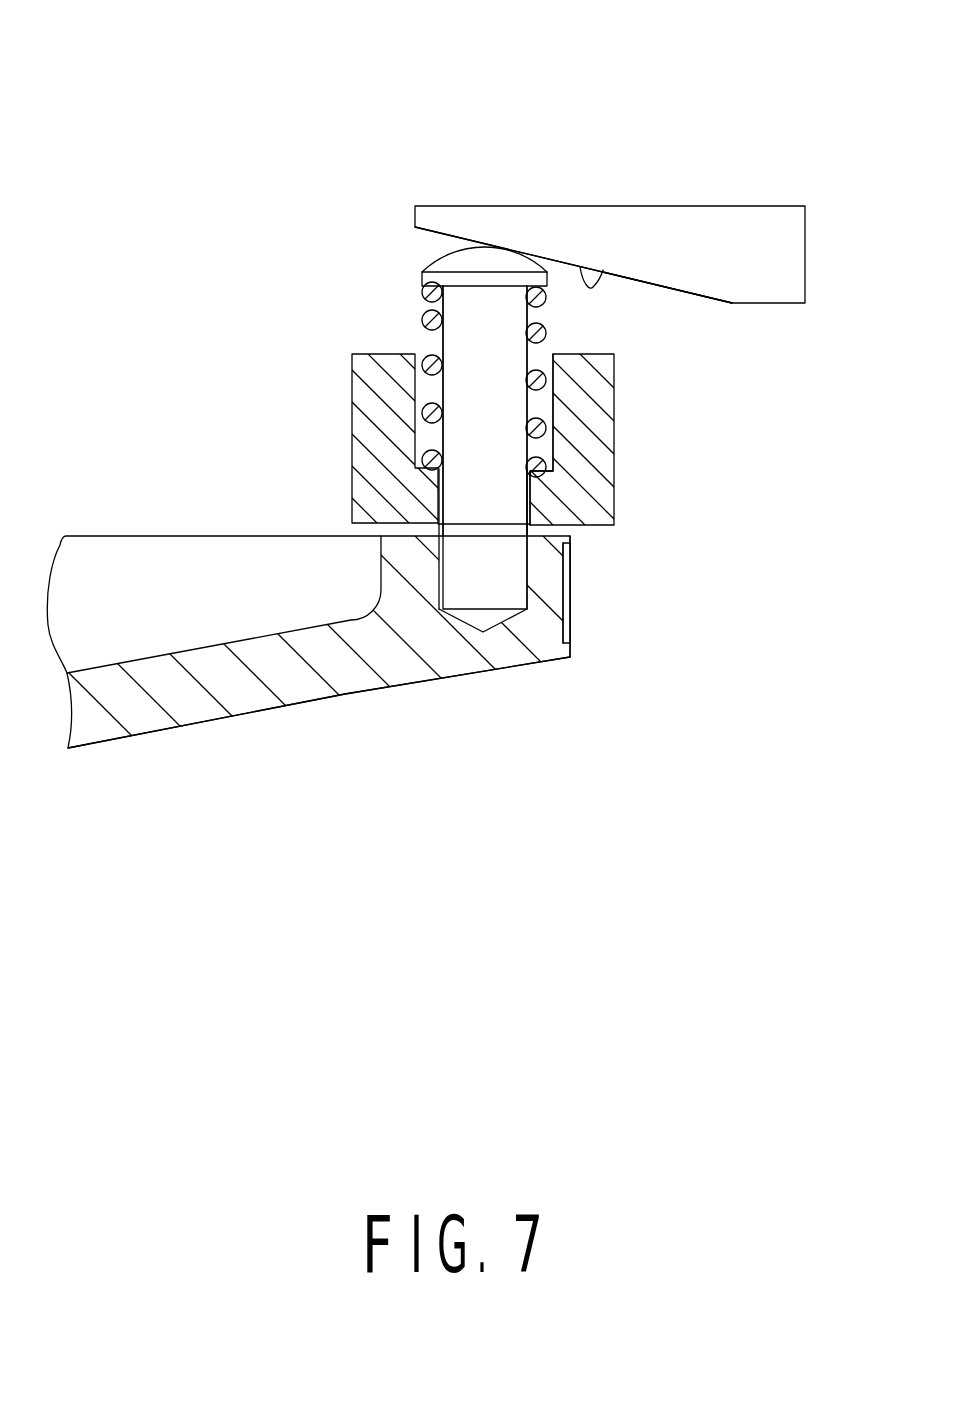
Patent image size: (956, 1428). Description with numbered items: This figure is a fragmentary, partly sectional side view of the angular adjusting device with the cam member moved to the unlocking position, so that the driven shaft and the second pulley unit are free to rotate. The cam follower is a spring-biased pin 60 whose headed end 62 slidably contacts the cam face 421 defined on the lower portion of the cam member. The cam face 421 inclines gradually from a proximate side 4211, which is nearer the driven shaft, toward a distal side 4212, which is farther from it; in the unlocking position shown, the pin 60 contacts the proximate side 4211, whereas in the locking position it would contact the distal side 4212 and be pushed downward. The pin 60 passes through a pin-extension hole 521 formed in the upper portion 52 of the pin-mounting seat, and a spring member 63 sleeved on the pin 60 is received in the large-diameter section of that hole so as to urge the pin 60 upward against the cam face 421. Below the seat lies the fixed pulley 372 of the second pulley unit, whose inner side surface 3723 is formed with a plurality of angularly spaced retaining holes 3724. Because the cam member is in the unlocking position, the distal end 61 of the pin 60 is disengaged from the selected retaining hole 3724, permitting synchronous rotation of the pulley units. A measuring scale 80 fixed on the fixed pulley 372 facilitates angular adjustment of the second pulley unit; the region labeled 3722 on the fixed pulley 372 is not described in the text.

The cam face 421 is at (602, 270).
The proximate side 4211 is at (437, 226).
The distal side 4212 is at (665, 283).
The spring-biased pin 60 is at (414, 342).
The distal end 61 is at (453, 497).
The headed end 62 is at (447, 258).
The spring member 63 is at (430, 410).
The upper portion 52 is at (600, 430).
The pin-extension hole 521 is at (553, 413).
The fixed pulley 372 is at (100, 723).
The bottom surface of seat body 3722 is at (355, 695).
The side surface 3723 is at (517, 590).
The retaining holes 3724 is at (560, 592).
The measuring scale 80 is at (572, 637).